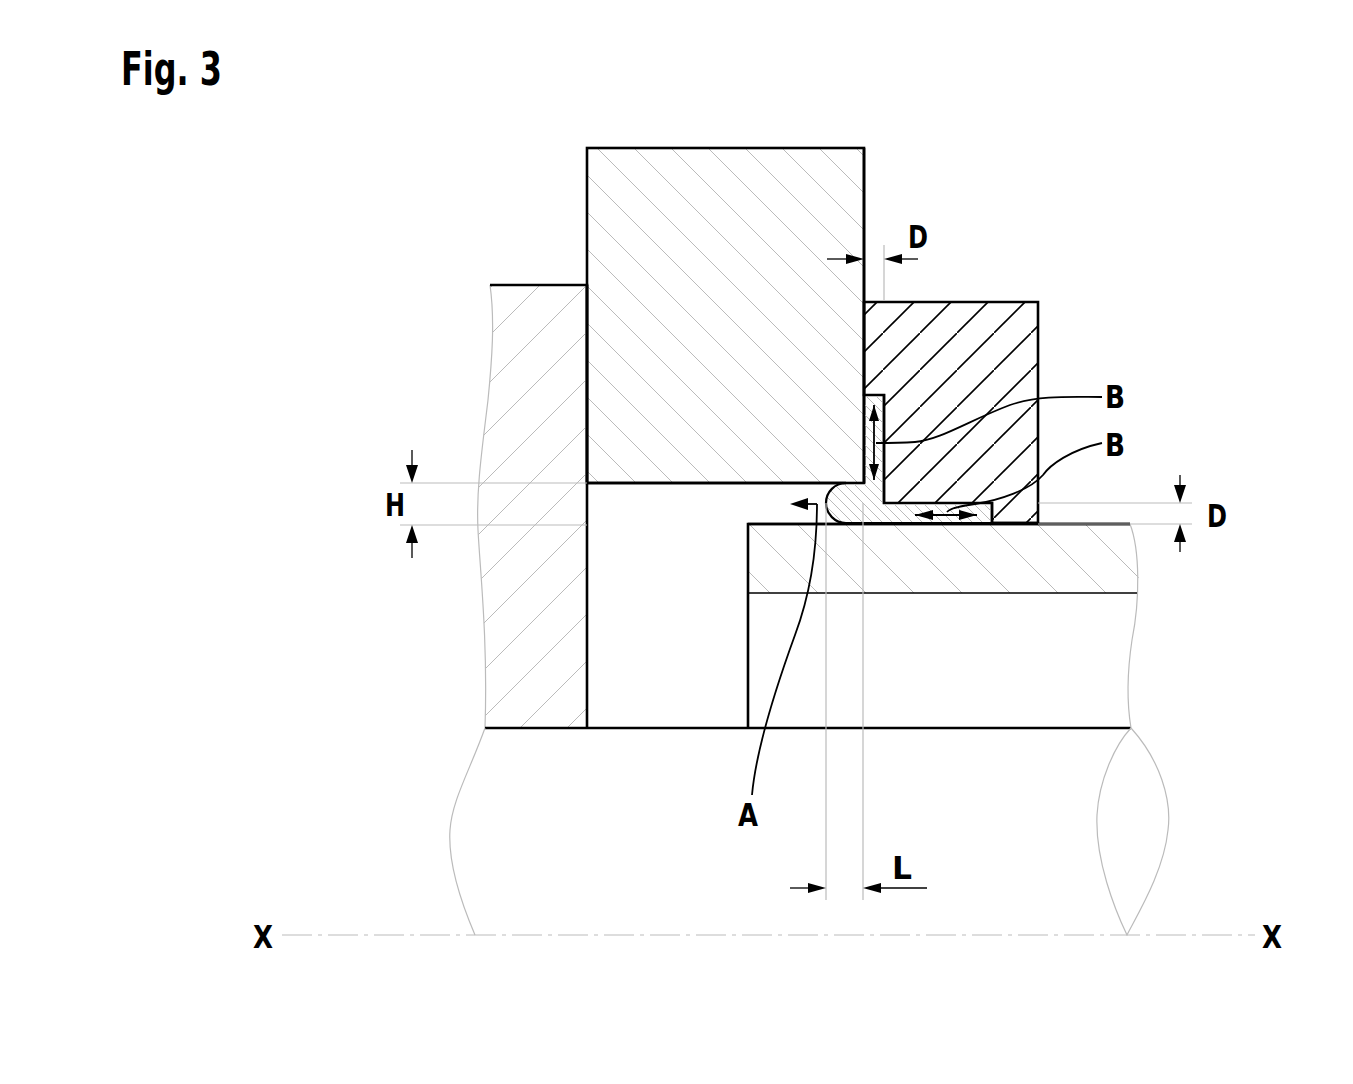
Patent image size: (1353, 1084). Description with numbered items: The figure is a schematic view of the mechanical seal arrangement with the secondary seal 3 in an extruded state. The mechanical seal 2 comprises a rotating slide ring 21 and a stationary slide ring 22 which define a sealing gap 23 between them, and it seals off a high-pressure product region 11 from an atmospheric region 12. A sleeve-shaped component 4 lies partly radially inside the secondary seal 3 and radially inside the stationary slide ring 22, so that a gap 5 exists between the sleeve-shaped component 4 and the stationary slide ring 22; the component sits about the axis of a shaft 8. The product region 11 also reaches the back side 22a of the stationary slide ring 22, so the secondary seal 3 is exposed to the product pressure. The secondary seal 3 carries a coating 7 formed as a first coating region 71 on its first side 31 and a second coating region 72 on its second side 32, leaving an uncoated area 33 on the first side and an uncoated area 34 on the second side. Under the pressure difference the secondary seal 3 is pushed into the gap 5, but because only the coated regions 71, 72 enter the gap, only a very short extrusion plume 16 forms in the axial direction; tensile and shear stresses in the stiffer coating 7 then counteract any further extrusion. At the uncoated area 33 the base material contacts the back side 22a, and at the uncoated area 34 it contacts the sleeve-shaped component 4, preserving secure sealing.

The mechanical seal 2 is at (439, 195).
The secondary seal 3 is at (982, 333).
The sleeve-shaped component 4 is at (1122, 575).
The gap 5 is at (787, 504).
The coating 7 is at (841, 459).
The shaft 8 is at (477, 815).
The product region 11 is at (352, 271).
The atmospheric region 12 is at (630, 690).
The extrusion plume 16 is at (852, 547).
The rotating slide ring 21 is at (520, 305).
The stationary slide ring 22 is at (614, 188).
The back side of the stationary slide ring 22a is at (866, 180).
The sealing gap 23 is at (587, 343).
The first side of the secondary seal 31 is at (846, 414).
The second side of the secondary seal 32 is at (954, 546).
The uncoated area on the first side 33 is at (845, 315).
The uncoated area on the second side 34 is at (1028, 543).
The first coating region 71 is at (876, 404).
The second coating region 72 is at (902, 512).